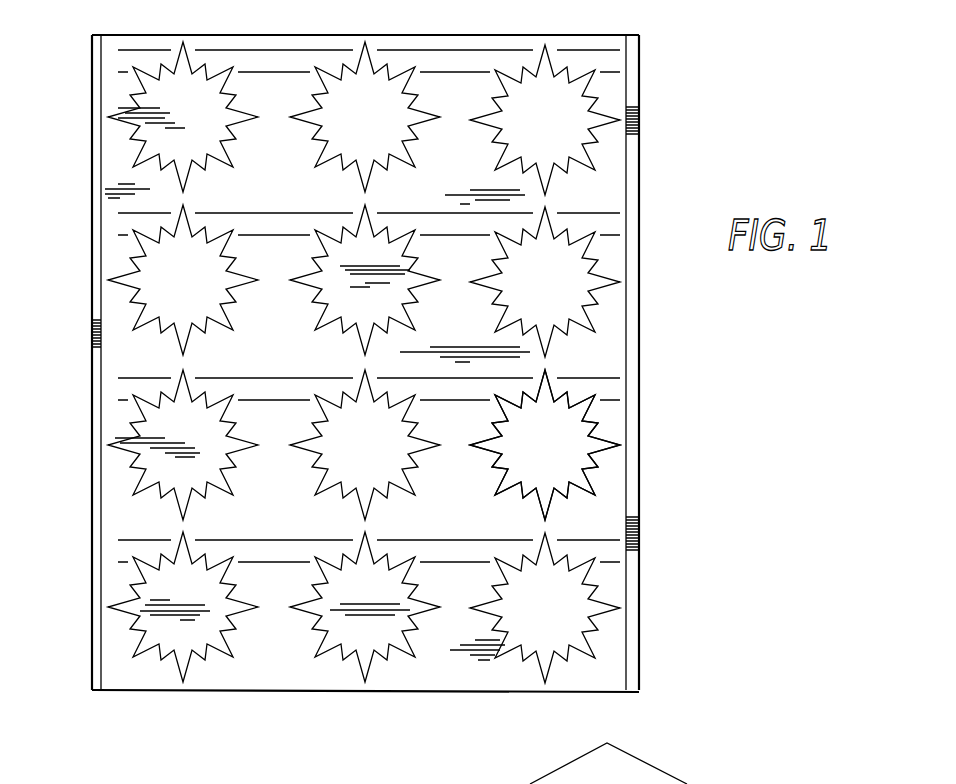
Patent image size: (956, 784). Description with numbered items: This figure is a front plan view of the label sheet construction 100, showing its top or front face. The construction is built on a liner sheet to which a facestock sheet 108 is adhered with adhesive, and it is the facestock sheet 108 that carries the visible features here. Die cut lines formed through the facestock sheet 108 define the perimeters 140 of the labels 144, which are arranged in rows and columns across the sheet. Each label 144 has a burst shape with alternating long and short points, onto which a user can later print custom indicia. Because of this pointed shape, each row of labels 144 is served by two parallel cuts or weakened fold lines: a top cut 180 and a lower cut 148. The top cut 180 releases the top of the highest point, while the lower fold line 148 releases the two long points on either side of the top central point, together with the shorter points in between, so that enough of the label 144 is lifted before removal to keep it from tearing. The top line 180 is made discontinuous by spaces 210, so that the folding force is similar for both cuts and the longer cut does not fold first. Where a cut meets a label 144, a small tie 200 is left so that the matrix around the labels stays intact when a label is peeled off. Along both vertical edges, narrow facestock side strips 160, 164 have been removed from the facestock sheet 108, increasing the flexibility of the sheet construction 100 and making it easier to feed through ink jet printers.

The label sheet construction 100 is at (708, 455).
The facestock sheet 108 is at (597, 680).
The label perimeters 140 is at (323, 654).
The labels 144 is at (600, 437).
The fold lines 148 is at (607, 568).
The facestock side strip 160 is at (92, 642).
The facestock side strip 164 is at (632, 520).
The top cut 180 is at (150, 50).
The tie 200 is at (598, 80).
The spaces 210 is at (228, 50).